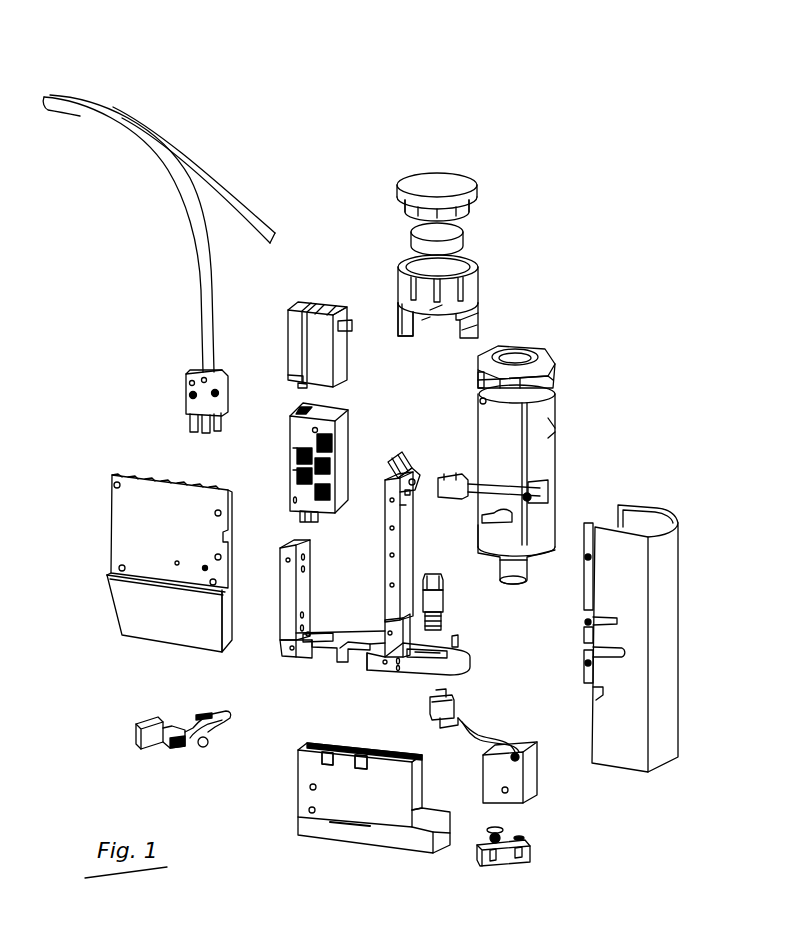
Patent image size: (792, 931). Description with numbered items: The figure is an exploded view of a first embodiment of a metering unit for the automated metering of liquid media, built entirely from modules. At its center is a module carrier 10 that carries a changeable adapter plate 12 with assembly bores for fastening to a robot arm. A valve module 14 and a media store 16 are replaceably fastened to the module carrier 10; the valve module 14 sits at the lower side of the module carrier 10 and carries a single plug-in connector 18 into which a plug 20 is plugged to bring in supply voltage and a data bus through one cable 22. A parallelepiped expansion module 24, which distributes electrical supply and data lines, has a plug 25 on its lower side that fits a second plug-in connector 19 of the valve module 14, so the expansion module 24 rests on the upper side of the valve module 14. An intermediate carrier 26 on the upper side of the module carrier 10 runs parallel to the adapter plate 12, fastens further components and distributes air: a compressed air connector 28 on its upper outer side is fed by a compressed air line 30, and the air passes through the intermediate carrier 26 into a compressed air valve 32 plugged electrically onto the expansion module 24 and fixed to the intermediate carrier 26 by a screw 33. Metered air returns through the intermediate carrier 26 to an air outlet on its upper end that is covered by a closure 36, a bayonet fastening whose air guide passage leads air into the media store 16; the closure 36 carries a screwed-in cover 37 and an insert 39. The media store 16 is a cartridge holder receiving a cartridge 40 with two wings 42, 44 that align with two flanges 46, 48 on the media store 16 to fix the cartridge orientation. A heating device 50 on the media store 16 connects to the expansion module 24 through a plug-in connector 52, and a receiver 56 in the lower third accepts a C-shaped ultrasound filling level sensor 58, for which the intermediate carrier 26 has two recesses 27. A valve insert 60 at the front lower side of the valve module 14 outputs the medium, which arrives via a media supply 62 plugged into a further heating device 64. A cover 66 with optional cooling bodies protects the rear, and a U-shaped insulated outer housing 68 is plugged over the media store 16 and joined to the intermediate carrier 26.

The module carrier 10 is at (413, 668).
The adapter plate 12 is at (300, 587).
The valve module 14 is at (370, 803).
The media store 16 is at (553, 428).
The plug-in connector 18 is at (328, 740).
The second plug-in connector 19 is at (372, 738).
The plug 20 is at (200, 398).
The cable 22 is at (193, 232).
The expansion module 24 is at (342, 440).
The plug 25 is at (298, 517).
The intermediate carrier 26 is at (424, 508).
The recesses 27 is at (385, 620).
The compressed air connector 28 is at (405, 467).
The compressed air line 30 is at (200, 168).
The compressed air valve 32 is at (323, 327).
The screw 33 is at (348, 322).
The closure 36 is at (467, 283).
The cover 37 is at (447, 186).
The insert 39 is at (432, 313).
The cartridge 40 is at (517, 357).
The wing 42 is at (498, 347).
The wing 44 is at (552, 373).
The flange 46 is at (480, 370).
The flange 48 is at (560, 370).
The heating device 50 is at (527, 500).
The plug-in connector 52 is at (450, 468).
The receiver 56 is at (480, 535).
The filling level sensor 58 is at (198, 750).
The valve insert 60 is at (503, 857).
The media supply 62 is at (440, 595).
The heating device 64 is at (520, 770).
The cover 66 is at (137, 550).
The outer housing 68 is at (662, 607).